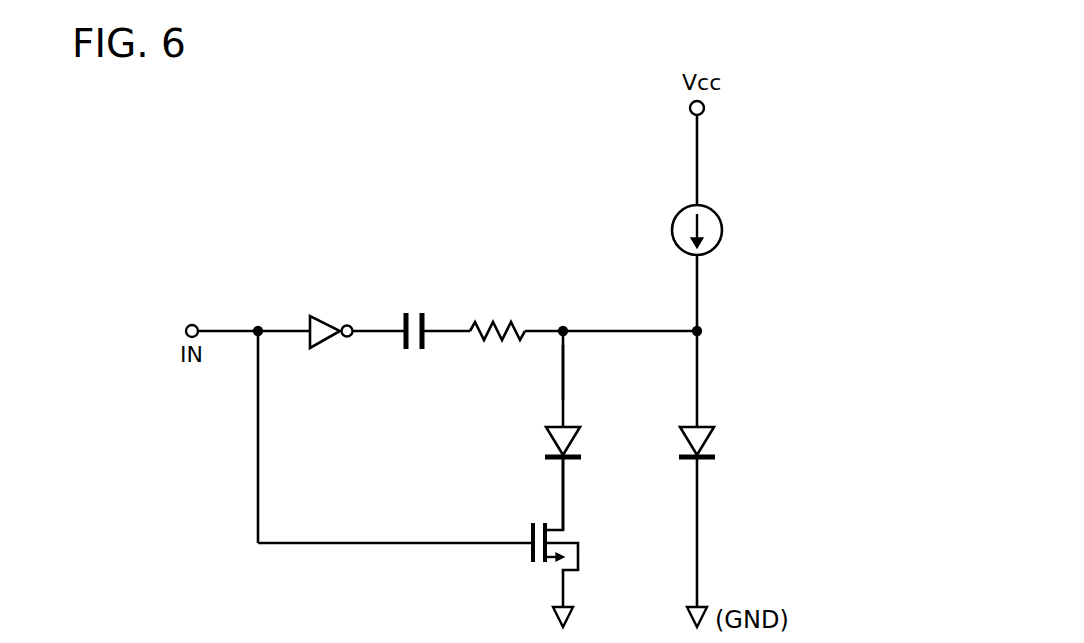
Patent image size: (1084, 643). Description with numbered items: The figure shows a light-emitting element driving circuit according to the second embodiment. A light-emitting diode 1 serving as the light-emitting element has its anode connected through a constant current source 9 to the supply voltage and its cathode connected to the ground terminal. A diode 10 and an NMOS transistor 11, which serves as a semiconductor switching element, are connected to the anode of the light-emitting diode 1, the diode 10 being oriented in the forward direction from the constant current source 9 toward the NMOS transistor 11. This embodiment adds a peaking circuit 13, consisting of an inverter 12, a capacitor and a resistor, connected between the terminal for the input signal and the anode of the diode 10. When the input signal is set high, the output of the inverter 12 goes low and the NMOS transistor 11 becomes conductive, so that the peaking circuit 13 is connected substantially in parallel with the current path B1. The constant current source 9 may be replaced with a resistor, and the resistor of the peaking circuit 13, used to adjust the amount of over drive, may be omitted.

The LED 1 is at (728, 456).
The constant current source 9 is at (722, 230).
The diode 10 is at (580, 440).
The NMOS transistor 11 is at (575, 534).
The inverter 12 is at (326, 320).
The peaking circuit 13 is at (450, 305).
The current path B1 is at (563, 376).